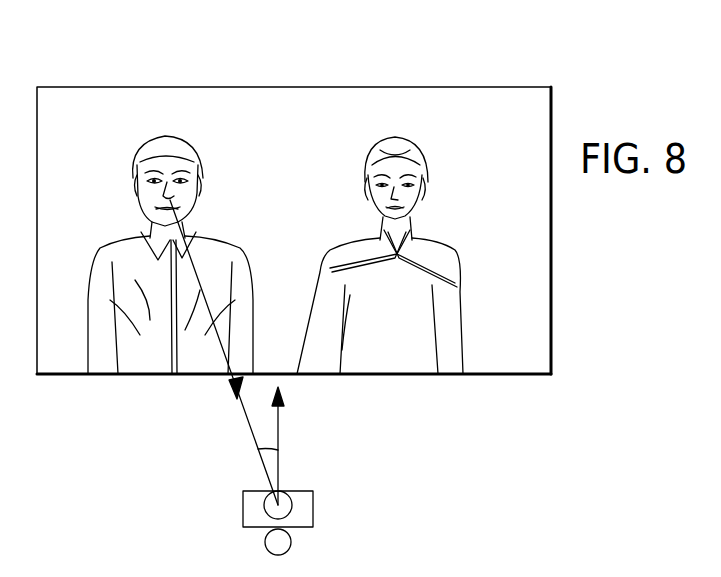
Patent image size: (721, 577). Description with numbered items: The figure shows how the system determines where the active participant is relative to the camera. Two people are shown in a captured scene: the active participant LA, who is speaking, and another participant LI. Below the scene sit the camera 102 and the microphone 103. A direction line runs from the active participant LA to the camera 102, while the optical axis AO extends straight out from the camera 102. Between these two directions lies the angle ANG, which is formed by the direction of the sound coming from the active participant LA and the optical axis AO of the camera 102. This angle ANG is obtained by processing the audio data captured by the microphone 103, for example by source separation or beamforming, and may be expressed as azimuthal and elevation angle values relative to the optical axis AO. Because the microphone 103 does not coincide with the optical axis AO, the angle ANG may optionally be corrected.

The active participant LA is at (163, 147).
The line toward other participant LI is at (407, 140).
The optical axis AO is at (279, 430).
The angle ANG is at (264, 444).
The camera 102 is at (302, 507).
The microphone 103 is at (280, 542).